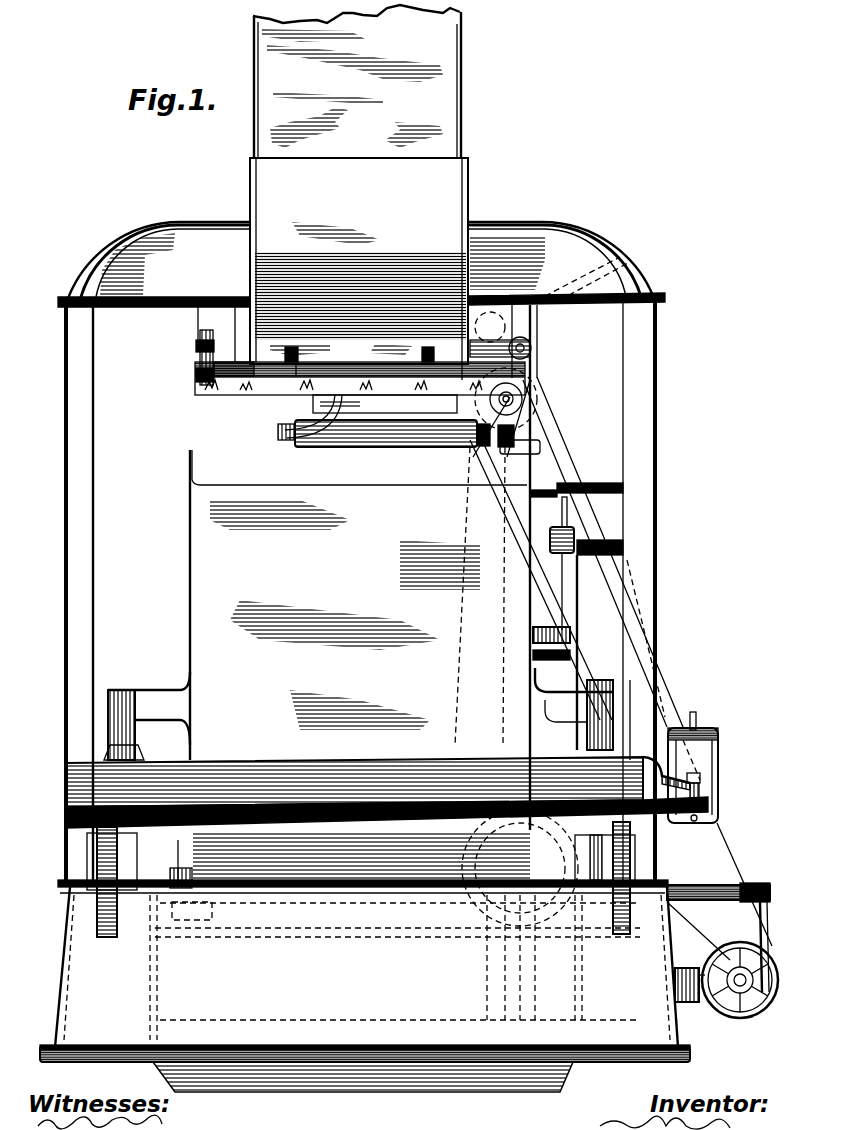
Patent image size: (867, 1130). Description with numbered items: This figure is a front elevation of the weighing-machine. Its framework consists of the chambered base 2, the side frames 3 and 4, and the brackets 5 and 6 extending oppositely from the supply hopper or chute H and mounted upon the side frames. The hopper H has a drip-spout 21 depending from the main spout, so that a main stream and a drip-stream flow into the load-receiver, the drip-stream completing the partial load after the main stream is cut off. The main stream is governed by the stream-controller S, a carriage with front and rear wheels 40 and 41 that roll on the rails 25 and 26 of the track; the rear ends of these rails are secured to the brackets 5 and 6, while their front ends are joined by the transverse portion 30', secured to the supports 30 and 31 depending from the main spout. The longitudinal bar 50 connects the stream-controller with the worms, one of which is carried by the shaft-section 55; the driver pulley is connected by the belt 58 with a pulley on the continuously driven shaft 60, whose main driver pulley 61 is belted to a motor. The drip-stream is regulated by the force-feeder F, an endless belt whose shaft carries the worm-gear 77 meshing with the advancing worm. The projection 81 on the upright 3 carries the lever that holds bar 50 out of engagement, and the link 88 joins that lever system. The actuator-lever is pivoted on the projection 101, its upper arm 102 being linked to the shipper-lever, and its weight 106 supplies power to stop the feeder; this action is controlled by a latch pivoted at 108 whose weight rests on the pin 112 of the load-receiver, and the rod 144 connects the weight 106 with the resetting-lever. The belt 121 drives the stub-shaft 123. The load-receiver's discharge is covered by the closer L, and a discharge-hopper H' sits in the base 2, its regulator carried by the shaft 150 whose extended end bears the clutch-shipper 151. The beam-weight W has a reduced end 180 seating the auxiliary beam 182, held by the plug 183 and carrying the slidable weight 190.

The supply hopper or chute H is at (375, 192).
The bracket 6 is at (186, 224).
The bracket 5 is at (527, 228).
The side frame 4 is at (95, 536).
The side frame 3 is at (657, 524).
The rail 26 is at (197, 326).
The rear rollers or wheels 41 is at (198, 346).
The front rollers or wheels 40 is at (198, 376).
The stream-controller S is at (200, 388).
The support 30 is at (360, 388).
The transverse portion 30' is at (360, 399).
The support 31 is at (298, 370).
The drip-spout 21 is at (352, 405).
The force-feeder F is at (378, 445).
The worm-gear 77 is at (500, 432).
The rail 25 is at (530, 318).
The longitudinal bar or connecting-rod 50 is at (531, 350).
The shaft-section 55 is at (545, 390).
The link 88 is at (548, 432).
The belt 58 is at (553, 442).
The projection 81 is at (599, 484).
The upper arm of actuator-lever 102 is at (566, 515).
The weight 106 is at (576, 528).
The projection 101 is at (592, 556).
The rod 144 is at (579, 596).
The pivot of latch 108 is at (532, 636).
The pin 112 is at (532, 657).
The belt 121 is at (560, 679).
The counterweight of beam B W is at (297, 770).
The closer L is at (177, 860).
The stub-shaft 123 is at (505, 866).
The chambered base 2 is at (365, 971).
The discharge-hopper H' is at (363, 1087).
The auxiliary beam 182 is at (698, 718).
The weight 190 is at (721, 755).
The plug 183 is at (700, 777).
The reduced end of weight W 180 is at (718, 797).
The shaft 150 is at (705, 888).
The clutch-shipper 151 is at (763, 916).
The main driver pulley 61 is at (727, 953).
The driven shaft 60 is at (742, 992).